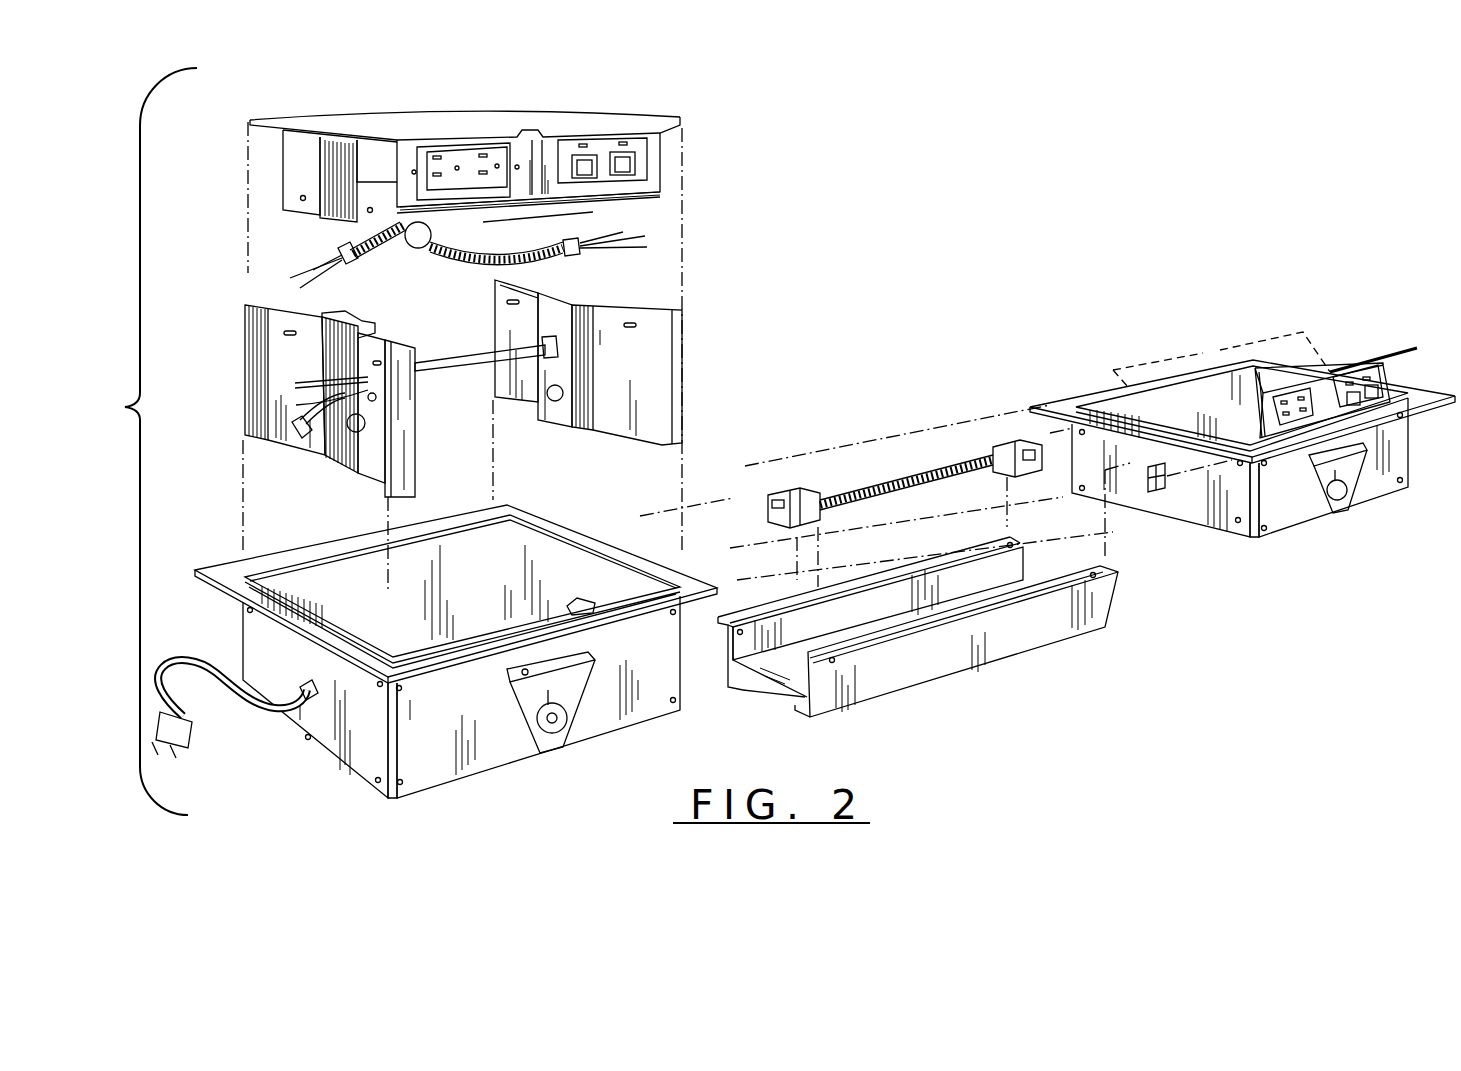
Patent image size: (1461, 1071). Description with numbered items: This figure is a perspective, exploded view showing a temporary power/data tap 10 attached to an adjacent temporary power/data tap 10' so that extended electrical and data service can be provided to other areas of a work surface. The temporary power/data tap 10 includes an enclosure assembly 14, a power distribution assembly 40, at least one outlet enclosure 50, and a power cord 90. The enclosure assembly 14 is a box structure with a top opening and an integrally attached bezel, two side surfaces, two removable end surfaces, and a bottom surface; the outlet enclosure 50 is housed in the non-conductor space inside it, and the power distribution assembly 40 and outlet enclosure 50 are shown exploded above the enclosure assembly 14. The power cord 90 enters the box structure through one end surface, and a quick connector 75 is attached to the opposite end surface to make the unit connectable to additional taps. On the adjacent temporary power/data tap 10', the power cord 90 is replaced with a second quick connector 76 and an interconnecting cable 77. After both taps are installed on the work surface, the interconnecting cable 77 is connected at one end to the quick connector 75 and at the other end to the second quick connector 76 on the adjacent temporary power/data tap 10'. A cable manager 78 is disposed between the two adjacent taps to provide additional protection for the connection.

The temporary power/data tap 10 is at (143, 441).
The adjacent temporary power/data tap 10' is at (1241, 414).
The enclosure assembly 14 is at (230, 551).
The power distribution assembly 40 is at (248, 300).
The outlet enclosure 50 is at (328, 109).
The quick connector 75 is at (577, 600).
The second quick connector 76 is at (1158, 494).
The interconnecting cable 77 is at (863, 488).
The cable manager 78 is at (1005, 637).
The power cord 90 is at (220, 697).